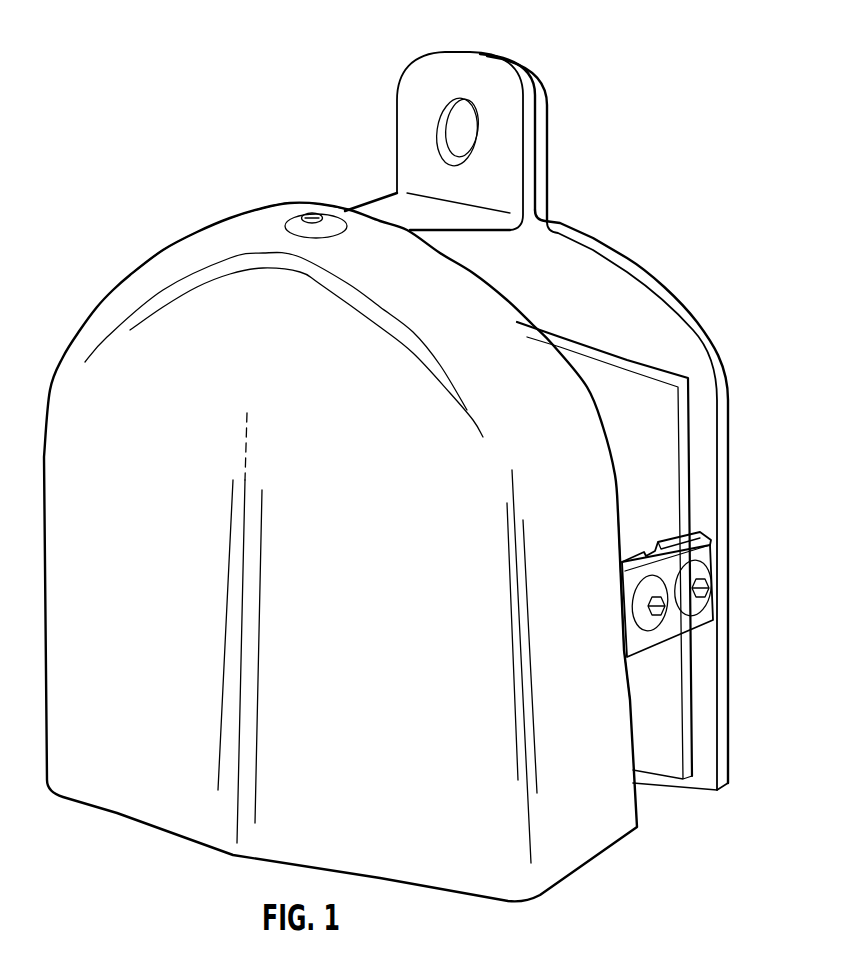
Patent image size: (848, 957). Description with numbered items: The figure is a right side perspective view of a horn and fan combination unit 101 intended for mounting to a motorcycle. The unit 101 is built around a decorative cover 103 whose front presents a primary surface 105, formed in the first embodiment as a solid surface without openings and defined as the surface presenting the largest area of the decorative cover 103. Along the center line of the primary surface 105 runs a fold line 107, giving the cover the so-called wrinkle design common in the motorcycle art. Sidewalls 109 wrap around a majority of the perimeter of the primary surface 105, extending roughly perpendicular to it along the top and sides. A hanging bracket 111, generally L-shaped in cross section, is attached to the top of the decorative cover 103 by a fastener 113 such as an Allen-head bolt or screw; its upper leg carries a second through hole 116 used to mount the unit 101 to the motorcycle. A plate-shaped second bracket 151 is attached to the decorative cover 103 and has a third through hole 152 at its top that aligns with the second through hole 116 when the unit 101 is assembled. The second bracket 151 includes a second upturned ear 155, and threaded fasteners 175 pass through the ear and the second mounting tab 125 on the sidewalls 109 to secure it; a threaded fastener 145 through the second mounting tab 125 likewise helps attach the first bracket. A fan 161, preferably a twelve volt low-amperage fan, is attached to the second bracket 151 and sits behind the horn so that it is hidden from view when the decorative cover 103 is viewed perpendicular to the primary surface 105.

The horn and fan combination unit 101 is at (176, 146).
The decorative cover 103 is at (86, 298).
The primary surface 105 is at (191, 456).
The fold line 107 is at (243, 568).
The sidewalls 109 is at (282, 240).
The hanging bracket 111 is at (396, 191).
The fastener 113 is at (298, 216).
The second through hole 116 is at (438, 133).
The second mounting tab 125 is at (709, 552).
The threaded fastener 145 is at (647, 632).
The second bracket 151 is at (548, 173).
The third through hole 152 is at (450, 108).
The second upturned ear 155 is at (677, 540).
The fan 161 is at (650, 380).
The threaded fasteners 175 is at (697, 620).